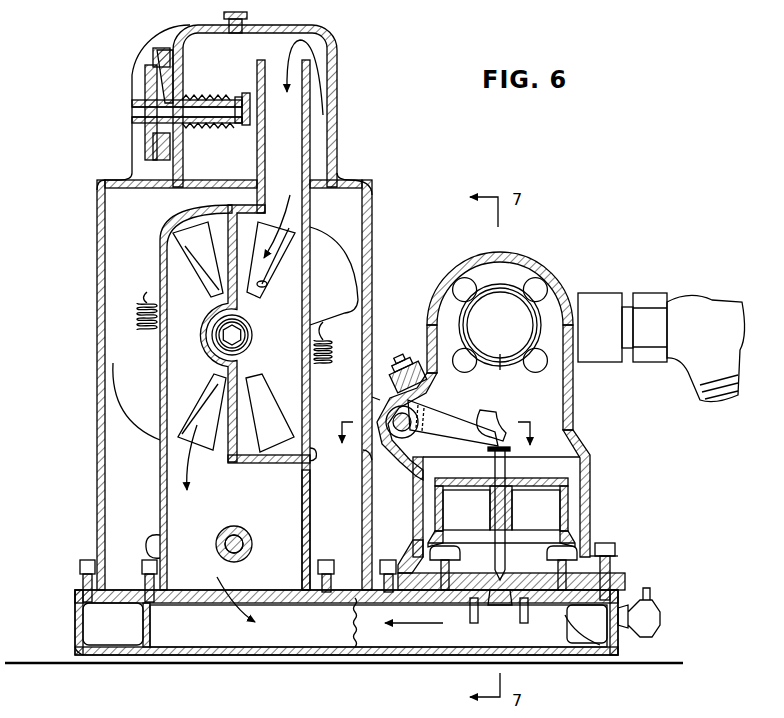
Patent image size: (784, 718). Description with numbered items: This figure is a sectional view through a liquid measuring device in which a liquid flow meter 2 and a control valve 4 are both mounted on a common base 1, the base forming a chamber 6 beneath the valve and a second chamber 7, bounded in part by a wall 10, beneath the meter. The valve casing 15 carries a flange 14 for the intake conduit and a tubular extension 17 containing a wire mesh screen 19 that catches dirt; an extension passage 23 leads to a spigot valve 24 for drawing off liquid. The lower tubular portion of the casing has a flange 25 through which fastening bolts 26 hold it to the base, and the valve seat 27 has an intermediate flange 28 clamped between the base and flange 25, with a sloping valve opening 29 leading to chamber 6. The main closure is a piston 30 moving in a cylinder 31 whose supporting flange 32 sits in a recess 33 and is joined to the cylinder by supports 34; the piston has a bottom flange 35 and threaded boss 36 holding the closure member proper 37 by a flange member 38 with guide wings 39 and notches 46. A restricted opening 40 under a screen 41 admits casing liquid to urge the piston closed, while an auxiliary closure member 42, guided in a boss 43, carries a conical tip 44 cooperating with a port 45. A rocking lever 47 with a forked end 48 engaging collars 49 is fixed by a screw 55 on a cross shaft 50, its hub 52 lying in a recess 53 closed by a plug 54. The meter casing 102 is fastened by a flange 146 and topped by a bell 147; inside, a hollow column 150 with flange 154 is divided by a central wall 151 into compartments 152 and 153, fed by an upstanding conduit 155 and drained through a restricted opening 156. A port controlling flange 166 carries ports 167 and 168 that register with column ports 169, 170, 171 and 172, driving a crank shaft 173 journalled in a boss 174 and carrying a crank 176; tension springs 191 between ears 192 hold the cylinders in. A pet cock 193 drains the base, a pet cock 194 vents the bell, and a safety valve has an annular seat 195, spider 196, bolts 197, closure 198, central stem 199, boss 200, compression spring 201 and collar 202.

The base 1 is at (72, 627).
The liquid flow meter 2 is at (94, 335).
The control valve 4 is at (592, 445).
The chamber 6 is at (581, 638).
The chamber 7 is at (282, 633).
The wall 10 is at (140, 625).
The flange 14 is at (442, 421).
The main valve casing 15 is at (575, 395).
The tubular extension 17 is at (520, 256).
The wire mesh screen 19 is at (490, 314).
The extension passage 23 is at (530, 310).
The spigot valve 24 is at (705, 312).
The flange 25 is at (615, 562).
The fastening bolts 26 is at (608, 552).
The valve seat 27 is at (587, 624).
The intermediate flange 28 is at (625, 578).
The sloping valve opening 29 is at (468, 600).
The piston 30 is at (560, 492).
The cylinder 31 is at (540, 512).
The supporting flange 32 is at (455, 598).
The recess 33 is at (588, 548).
The supports 34 is at (412, 555).
The bottom flange 35 is at (512, 568).
The central threaded boss 36 is at (520, 612).
The closure member proper 37 is at (545, 612).
The flange member 38 is at (500, 612).
The guide wings 39 is at (478, 610).
The restricted opening 40 is at (535, 478).
The screen 41 is at (592, 436).
The auxiliary closure member 42 is at (496, 460).
The boss 43 is at (487, 505).
The conical tip 44 is at (497, 568).
The port 45 is at (498, 608).
The notches 46 is at (634, 650).
The rocking lever 47 is at (440, 422).
The forked end 48 is at (517, 422).
The collars 49 is at (482, 438).
The cross shaft 50 is at (392, 406).
The hub 52 is at (368, 455).
The recess 53 is at (385, 450).
The plug 54 is at (405, 365).
The screw 55 is at (416, 356).
The casing 102 is at (372, 212).
The flange 146 is at (78, 586).
The dome or bell 147 is at (338, 78).
The hollow column 150 is at (310, 515).
The central wall 151 is at (224, 455).
The compartment 152 is at (287, 322).
The compartment 153 is at (200, 378).
The flange 154 is at (138, 575).
The upstanding conduit 155 is at (312, 136).
The restricted opening 156 is at (317, 455).
The port controlling flange 166 is at (344, 295).
The upper port 167 is at (266, 288).
The lower port 168 is at (180, 438).
The port 169 is at (178, 243).
The port 170 is at (296, 230).
The port 171 is at (207, 405).
The port 172 is at (272, 398).
The crank shaft 173 is at (244, 553).
The boss 174 is at (253, 543).
The crank 176 is at (150, 540).
The tension springs 191 is at (137, 318).
The ears 192 is at (142, 303).
The pet cock 193 is at (660, 615).
The pet cock 194 is at (236, 30).
The annular seat 195 is at (168, 70).
The spider 196 is at (165, 143).
The bolts 197 is at (153, 52).
The closure 198 is at (145, 85).
The central stem 199 is at (196, 106).
The boss 200 is at (208, 97).
The compression spring 201 is at (238, 124).
The collar 202 is at (250, 115).